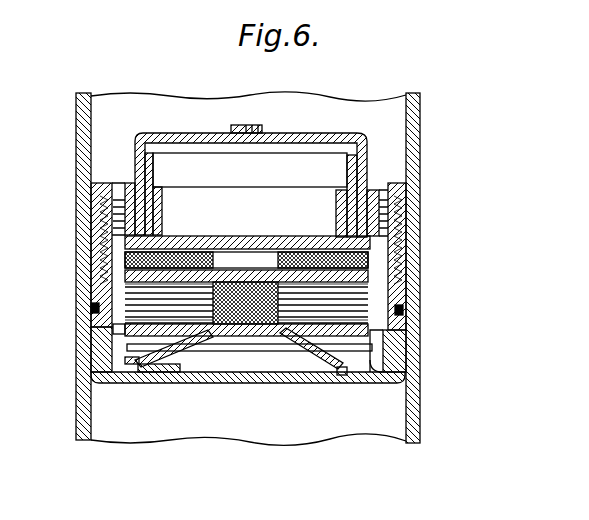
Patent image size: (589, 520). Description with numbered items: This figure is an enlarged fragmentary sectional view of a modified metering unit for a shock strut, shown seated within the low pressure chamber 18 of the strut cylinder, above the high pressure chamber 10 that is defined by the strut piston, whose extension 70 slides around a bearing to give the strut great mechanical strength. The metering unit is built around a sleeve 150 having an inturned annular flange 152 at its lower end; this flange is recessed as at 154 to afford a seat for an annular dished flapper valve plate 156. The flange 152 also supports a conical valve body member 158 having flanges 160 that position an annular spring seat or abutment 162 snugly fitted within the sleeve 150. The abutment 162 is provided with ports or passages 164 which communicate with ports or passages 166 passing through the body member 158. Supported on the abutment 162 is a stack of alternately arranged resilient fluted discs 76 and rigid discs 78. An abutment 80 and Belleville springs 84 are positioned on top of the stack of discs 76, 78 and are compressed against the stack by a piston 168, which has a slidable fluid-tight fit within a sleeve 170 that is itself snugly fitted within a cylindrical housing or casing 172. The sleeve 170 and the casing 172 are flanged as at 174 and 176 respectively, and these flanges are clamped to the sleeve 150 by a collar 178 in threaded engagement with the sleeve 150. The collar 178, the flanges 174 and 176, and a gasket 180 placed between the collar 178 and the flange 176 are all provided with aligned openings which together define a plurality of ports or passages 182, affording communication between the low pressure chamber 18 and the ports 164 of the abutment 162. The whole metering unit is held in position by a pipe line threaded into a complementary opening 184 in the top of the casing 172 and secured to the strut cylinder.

The high pressure chamber 10 is at (358, 436).
The low pressure chamber 18 is at (392, 116).
The extension 70 is at (396, 244).
The resilient fluted discs 76 is at (125, 284).
The rigid discs 78 is at (92, 308).
The abutment 80 is at (405, 271).
The Belleville springs 84 is at (122, 257).
The sleeve 150 is at (400, 331).
The inturned annular flange 152 is at (418, 414).
The recess 154 is at (338, 378).
The annular dished flapper valve plate 156 is at (298, 357).
The conical valve body member 158 is at (405, 353).
The flanges 160 is at (281, 342).
The annular spring seat or abutment 162 is at (136, 333).
The ports or passages 164 is at (117, 328).
The ports or passages 166 is at (168, 364).
The piston 168 is at (366, 188).
The sleeve 170 is at (154, 171).
The cylindrical housing or casing 172 is at (136, 138).
The flange 174 is at (372, 237).
The flange 176 is at (386, 212).
The collar 178 is at (400, 191).
The gasket 180 is at (106, 208).
The ports or passages 182 is at (96, 183).
The opening 184 is at (250, 124).